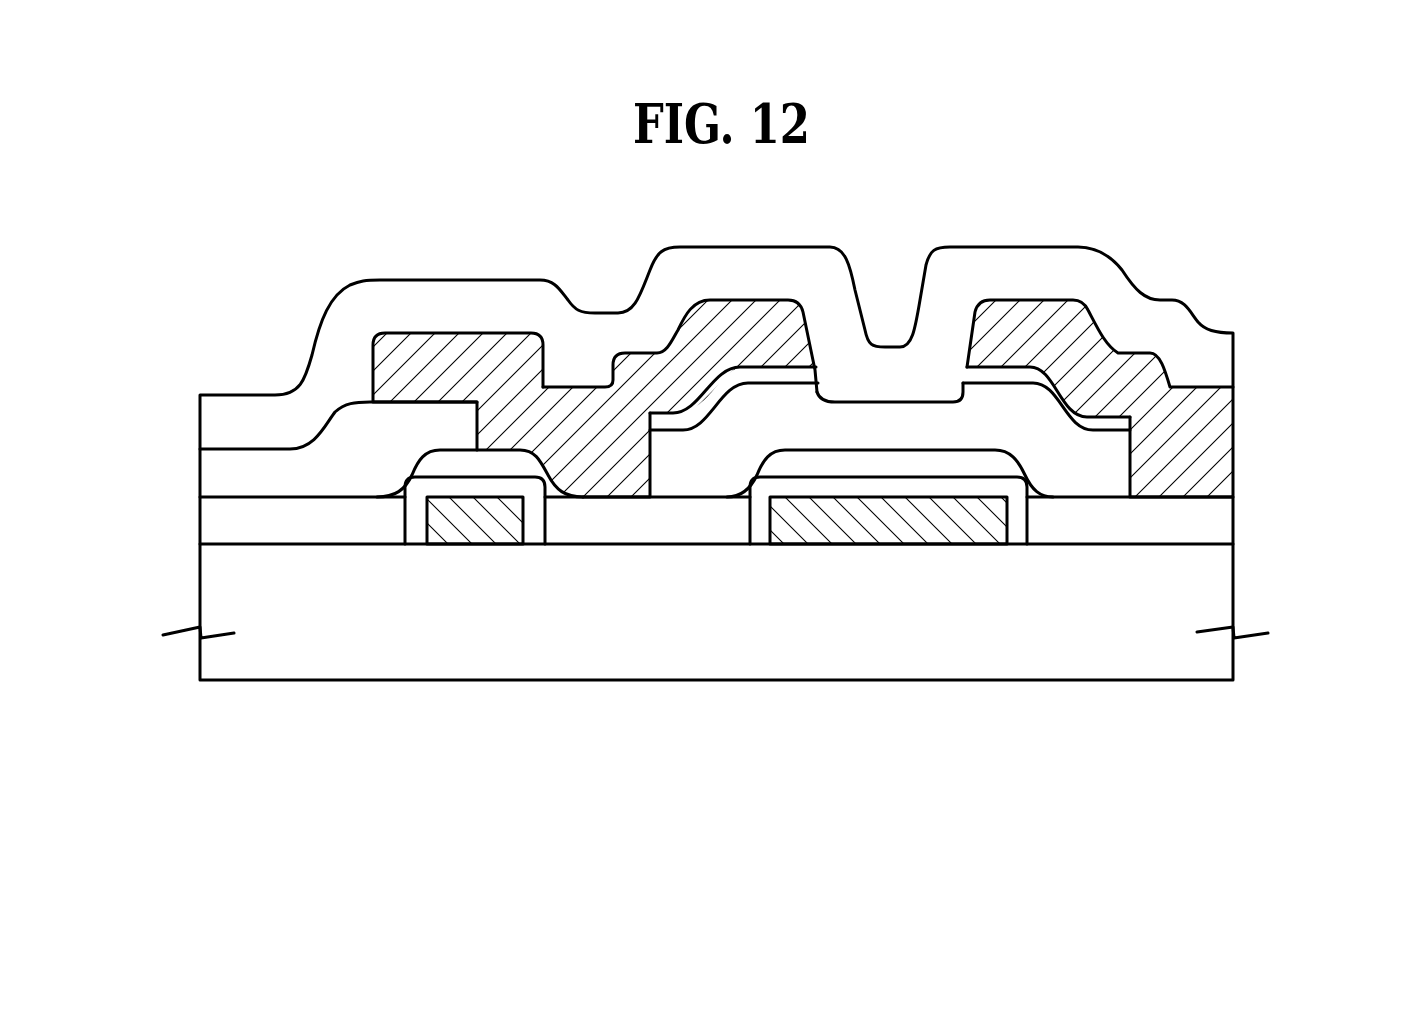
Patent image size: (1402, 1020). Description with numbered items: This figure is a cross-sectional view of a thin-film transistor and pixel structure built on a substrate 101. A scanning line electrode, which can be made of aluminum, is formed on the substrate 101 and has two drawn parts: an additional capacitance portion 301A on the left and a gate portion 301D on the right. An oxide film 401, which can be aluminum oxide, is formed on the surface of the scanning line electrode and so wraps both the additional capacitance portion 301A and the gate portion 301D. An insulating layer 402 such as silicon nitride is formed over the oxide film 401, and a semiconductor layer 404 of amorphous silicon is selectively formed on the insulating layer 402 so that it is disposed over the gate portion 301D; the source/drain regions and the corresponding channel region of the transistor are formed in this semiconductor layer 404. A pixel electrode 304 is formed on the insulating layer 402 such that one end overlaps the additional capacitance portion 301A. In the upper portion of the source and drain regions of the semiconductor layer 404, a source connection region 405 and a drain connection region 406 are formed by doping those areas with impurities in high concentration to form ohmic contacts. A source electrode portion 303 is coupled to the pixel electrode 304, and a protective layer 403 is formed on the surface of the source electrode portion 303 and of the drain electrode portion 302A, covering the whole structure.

The substrate 101 is at (1215, 578).
The insulating layer 402 is at (1213, 523).
The oxide film 401 is at (415, 517).
The additional capacitance portion 301A is at (497, 517).
The gate portion 301D is at (972, 515).
The semiconductor layer 404 is at (1110, 484).
The pixel electrode 304 is at (222, 470).
The source connection region 405 is at (668, 422).
The source electrode portion 303 is at (477, 347).
The drain connection region 406 is at (1110, 422).
The drain electrode portion 302A is at (1237, 421).
The protective layer 403 is at (1215, 362).